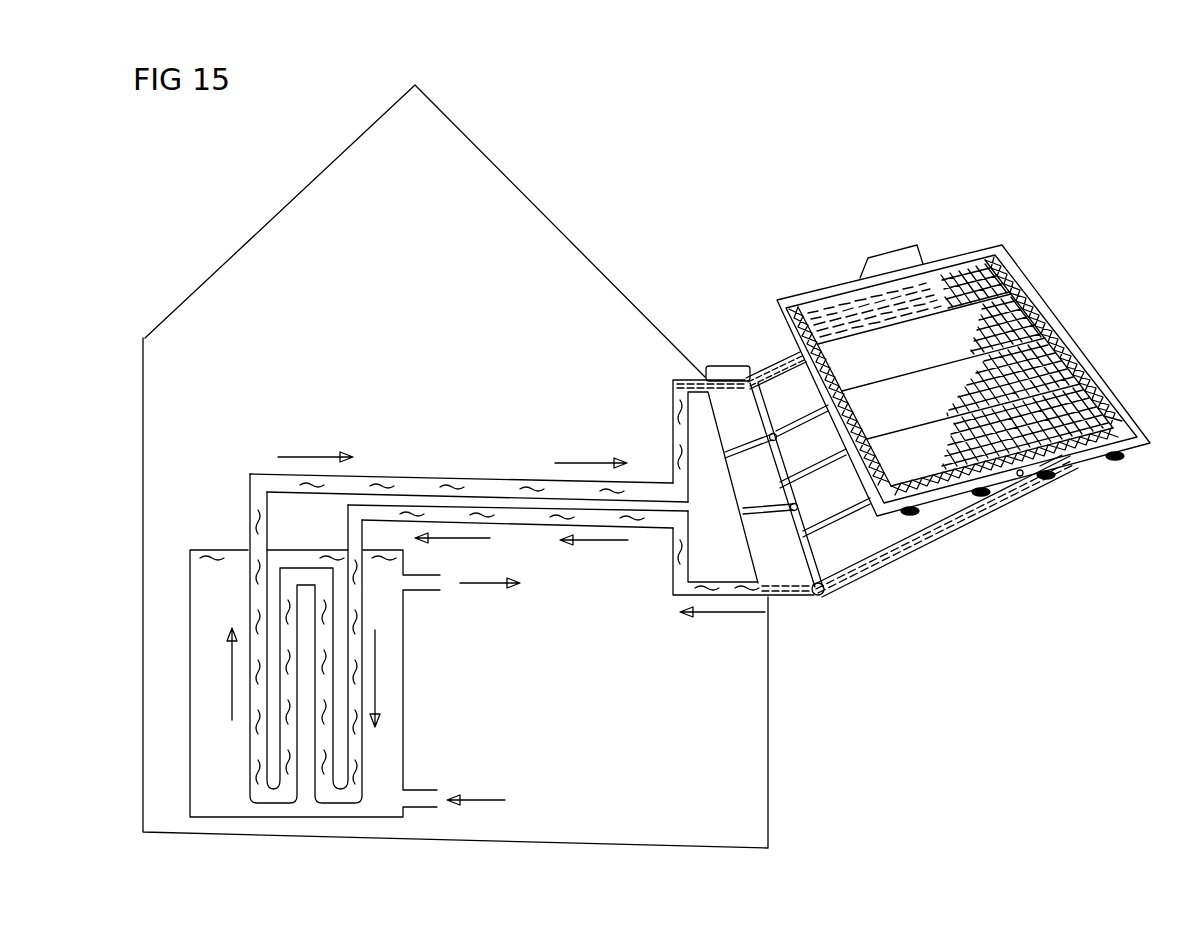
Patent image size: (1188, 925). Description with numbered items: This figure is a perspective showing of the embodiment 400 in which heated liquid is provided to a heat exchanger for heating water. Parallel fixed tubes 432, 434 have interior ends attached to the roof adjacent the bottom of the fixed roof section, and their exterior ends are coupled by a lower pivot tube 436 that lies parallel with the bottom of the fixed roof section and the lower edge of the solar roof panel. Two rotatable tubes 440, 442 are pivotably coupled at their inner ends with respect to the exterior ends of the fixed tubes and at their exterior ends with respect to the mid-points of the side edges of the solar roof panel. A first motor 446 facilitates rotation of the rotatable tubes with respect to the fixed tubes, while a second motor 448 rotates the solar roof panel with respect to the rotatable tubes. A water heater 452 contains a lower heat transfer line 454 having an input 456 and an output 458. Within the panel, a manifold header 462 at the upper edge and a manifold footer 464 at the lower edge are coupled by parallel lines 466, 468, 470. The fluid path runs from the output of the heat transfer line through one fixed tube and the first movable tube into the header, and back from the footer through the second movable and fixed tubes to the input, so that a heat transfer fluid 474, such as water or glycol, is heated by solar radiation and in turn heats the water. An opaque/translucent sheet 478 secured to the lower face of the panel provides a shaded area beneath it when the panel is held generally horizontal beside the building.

The solar heating system 400 is at (753, 159).
The fixed tube 432 is at (705, 378).
The fixed tube 434 is at (788, 597).
The lower pivot tube 436 is at (803, 548).
The rotatable tube 440 is at (768, 363).
The rotatable tube 442 is at (856, 571).
The first motor 446 is at (706, 370).
The second motor 448 is at (900, 250).
The water heater 452 is at (217, 750).
The lower heat transfer line 454 is at (510, 515).
The input 456 is at (348, 548).
The output 458 is at (247, 548).
The manifold header 462 is at (775, 303).
The manifold footer 464 is at (1058, 337).
The parallel line 466 is at (832, 290).
The parallel line 468 is at (918, 477).
The parallel line 470 is at (1052, 468).
The heat transfer fluid 474 is at (356, 484).
The opaque/translucent sheet 478 is at (1072, 470).